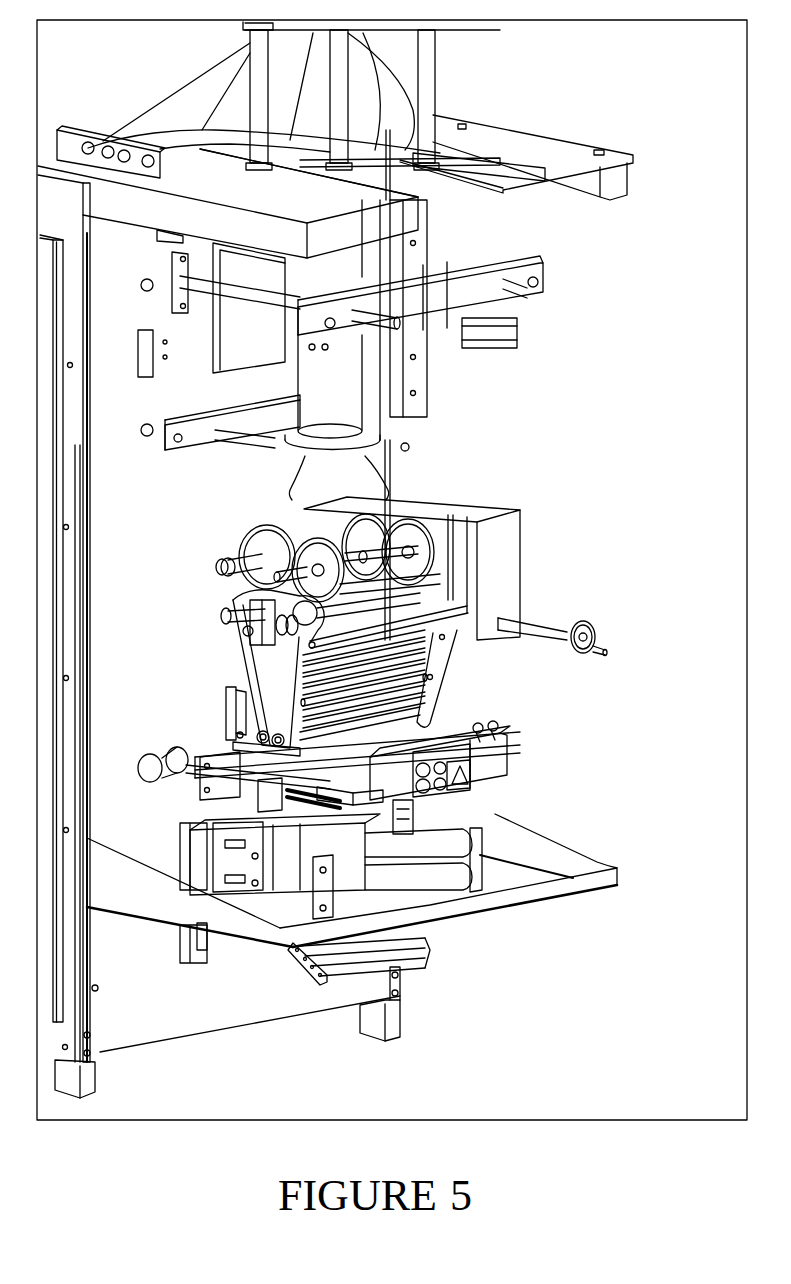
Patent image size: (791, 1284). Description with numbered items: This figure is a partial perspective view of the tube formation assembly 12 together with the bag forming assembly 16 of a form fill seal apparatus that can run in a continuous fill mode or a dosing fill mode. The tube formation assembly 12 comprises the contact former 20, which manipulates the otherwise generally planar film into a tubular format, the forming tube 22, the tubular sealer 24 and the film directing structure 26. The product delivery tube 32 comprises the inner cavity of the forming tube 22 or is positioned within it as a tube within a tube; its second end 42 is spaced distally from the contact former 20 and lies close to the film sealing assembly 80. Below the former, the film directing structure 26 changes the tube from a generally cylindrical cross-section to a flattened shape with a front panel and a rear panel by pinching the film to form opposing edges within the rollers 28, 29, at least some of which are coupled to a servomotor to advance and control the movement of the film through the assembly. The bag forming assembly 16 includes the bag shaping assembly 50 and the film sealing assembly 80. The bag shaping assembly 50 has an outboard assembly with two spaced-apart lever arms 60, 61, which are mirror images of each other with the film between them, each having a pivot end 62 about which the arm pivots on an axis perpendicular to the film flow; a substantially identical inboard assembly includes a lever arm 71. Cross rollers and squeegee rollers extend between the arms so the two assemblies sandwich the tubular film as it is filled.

The tube formation assembly 12 is at (142, 83).
The contact former 20 is at (208, 68).
The tubular sealer 24 is at (418, 374).
The product delivery tube 32 is at (412, 457).
The forming tube 22 is at (341, 406).
The rollers 28 is at (400, 507).
The rollers 29 is at (315, 530).
The film directing structure 26 is at (218, 553).
The bag shaping assembly 50 is at (218, 627).
The bag forming assembly 16 is at (218, 657).
The second end 42 is at (405, 668).
The lever arm 71 is at (257, 695).
The lever arm 61 is at (280, 727).
The pivot end 62 is at (438, 672).
The lever arm 60 is at (447, 647).
The film sealing assembly 80 is at (200, 792).